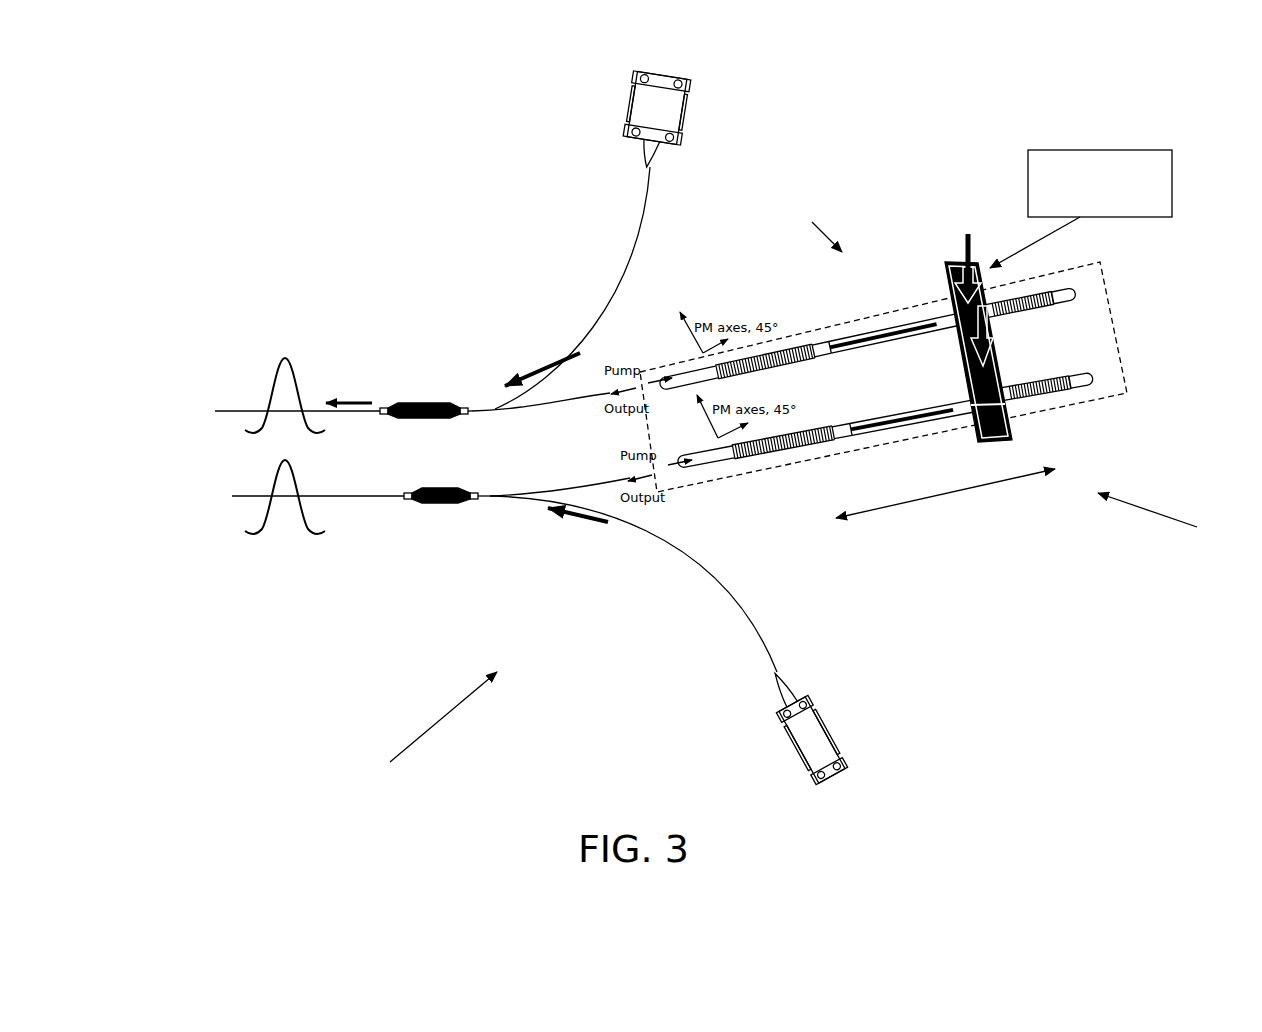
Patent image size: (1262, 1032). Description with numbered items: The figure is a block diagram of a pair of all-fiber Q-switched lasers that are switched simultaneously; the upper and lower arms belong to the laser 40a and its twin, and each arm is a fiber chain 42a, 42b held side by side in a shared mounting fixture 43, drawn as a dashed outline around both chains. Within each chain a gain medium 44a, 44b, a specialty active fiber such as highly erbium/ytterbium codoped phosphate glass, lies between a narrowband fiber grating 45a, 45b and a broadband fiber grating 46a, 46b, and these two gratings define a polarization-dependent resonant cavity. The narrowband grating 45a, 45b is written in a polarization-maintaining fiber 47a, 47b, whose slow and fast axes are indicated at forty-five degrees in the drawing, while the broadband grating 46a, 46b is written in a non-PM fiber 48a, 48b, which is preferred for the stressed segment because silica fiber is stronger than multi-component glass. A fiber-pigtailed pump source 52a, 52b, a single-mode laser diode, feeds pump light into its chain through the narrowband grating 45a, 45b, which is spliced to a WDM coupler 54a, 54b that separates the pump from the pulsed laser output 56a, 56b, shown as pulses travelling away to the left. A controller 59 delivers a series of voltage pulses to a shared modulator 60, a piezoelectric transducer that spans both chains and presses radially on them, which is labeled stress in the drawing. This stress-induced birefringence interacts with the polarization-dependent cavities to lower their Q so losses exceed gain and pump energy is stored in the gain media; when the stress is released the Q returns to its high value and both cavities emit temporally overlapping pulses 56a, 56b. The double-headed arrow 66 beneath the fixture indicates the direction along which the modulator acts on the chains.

The all-fiber Q-switched laser 40a is at (417, 733).
The fiber chain 42a is at (1166, 517).
The fiber chain 42b is at (805, 225).
The shared mounting fixture 43 is at (1118, 370).
The gain medium 44a is at (911, 417).
The gain medium 44b is at (893, 333).
The narrowband fiber grating 45a is at (783, 442).
The narrowband fiber grating 45b is at (765, 361).
The broadband fiber grating 46a is at (1036, 388).
The broadband fiber grating 46b is at (1020, 304).
The polarization-maintaining fiber 47a is at (705, 457).
The polarization-maintaining fiber 47b is at (688, 378).
The non-PM fiber 48a is at (1081, 380).
The non-PM fiber 48b is at (1064, 295).
The pump source 52a is at (834, 727).
The pump source 52b is at (635, 110).
The WDM coupler 54a is at (447, 501).
The WDM coupler 54b is at (432, 402).
The pulsed laser output 56a is at (280, 503).
The pulsed laser output 56b is at (268, 381).
The controller 59 is at (1172, 168).
The shared modulator 60 is at (1007, 367).
The direction of stress adjustment 66 is at (968, 492).